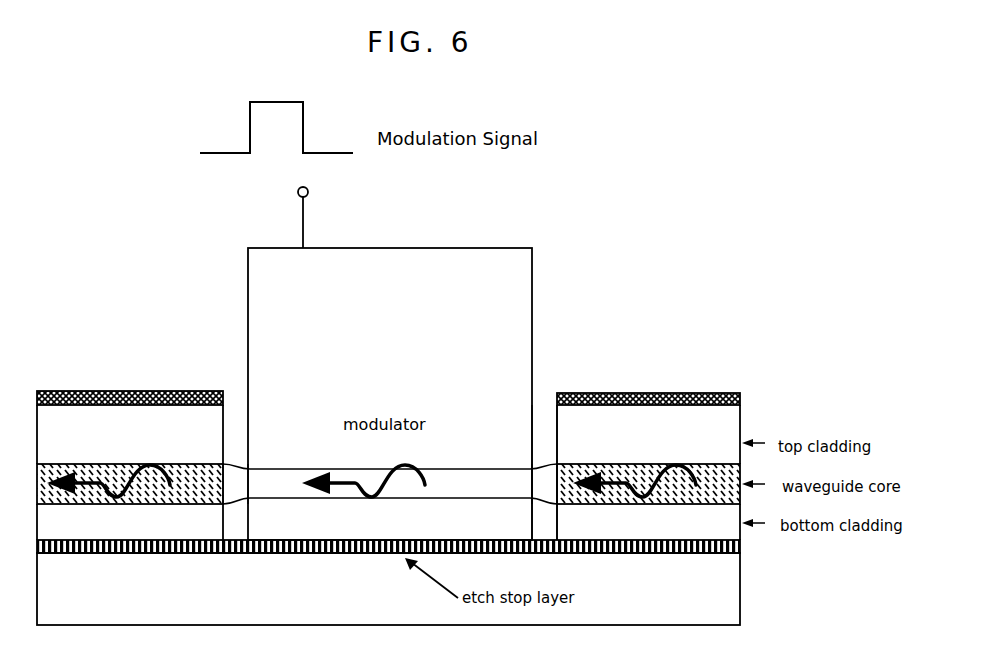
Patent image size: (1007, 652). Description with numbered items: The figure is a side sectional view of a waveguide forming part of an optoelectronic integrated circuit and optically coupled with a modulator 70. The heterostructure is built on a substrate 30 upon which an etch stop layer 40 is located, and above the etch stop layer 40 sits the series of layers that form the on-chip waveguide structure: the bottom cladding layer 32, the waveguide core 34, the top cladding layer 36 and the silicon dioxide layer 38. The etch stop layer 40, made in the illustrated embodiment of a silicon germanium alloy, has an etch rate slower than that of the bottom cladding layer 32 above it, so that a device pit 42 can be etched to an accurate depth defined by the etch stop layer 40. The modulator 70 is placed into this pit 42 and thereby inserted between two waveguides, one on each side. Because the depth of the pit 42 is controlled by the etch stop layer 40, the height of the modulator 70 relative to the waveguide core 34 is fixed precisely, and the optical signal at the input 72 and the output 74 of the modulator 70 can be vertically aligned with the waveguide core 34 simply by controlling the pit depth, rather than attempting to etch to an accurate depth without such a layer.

The substrate 30 is at (728, 600).
The bottom cladding layer 32 is at (668, 525).
The waveguide core 34 is at (712, 478).
The top cladding layer 36 is at (476, 434).
The silicon dioxide layer 38 is at (740, 398).
The etch stop layer 40 is at (742, 548).
The device pit 42 is at (543, 397).
The modulator 70 is at (513, 262).
The input 72 is at (548, 466).
The output 74 is at (230, 466).